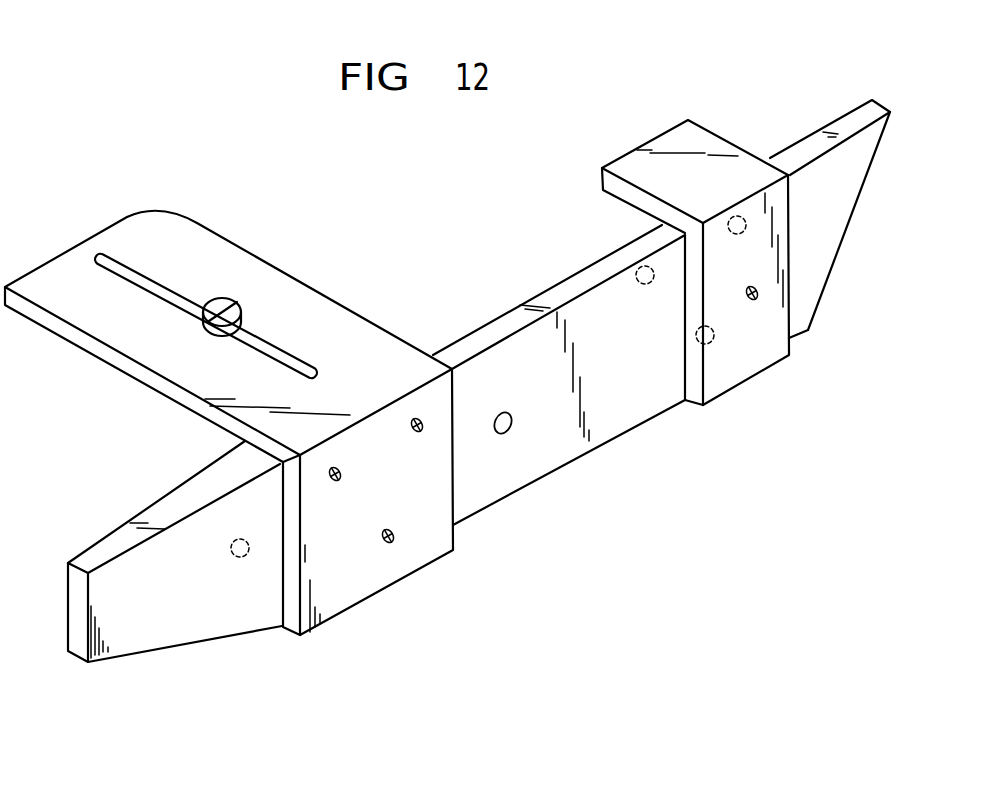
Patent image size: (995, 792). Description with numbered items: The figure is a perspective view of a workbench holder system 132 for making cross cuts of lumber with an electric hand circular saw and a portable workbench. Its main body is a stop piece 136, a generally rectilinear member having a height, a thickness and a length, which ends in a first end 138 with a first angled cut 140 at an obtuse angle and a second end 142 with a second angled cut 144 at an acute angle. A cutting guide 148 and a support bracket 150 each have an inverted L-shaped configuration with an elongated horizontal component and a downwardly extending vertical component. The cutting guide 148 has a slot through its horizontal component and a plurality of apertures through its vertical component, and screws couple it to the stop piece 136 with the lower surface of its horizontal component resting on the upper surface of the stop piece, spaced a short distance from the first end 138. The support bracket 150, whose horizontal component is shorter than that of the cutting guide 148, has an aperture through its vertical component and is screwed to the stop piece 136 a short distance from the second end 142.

The workbench holder system 132 is at (207, 143).
The stop piece 136 is at (572, 287).
The first end 138 is at (75, 584).
The first angled cut 140 is at (102, 613).
The second end 142 is at (853, 120).
The second angled cut 144 is at (880, 140).
The cutting guide 148 is at (270, 287).
The support bracket 150 is at (672, 138).